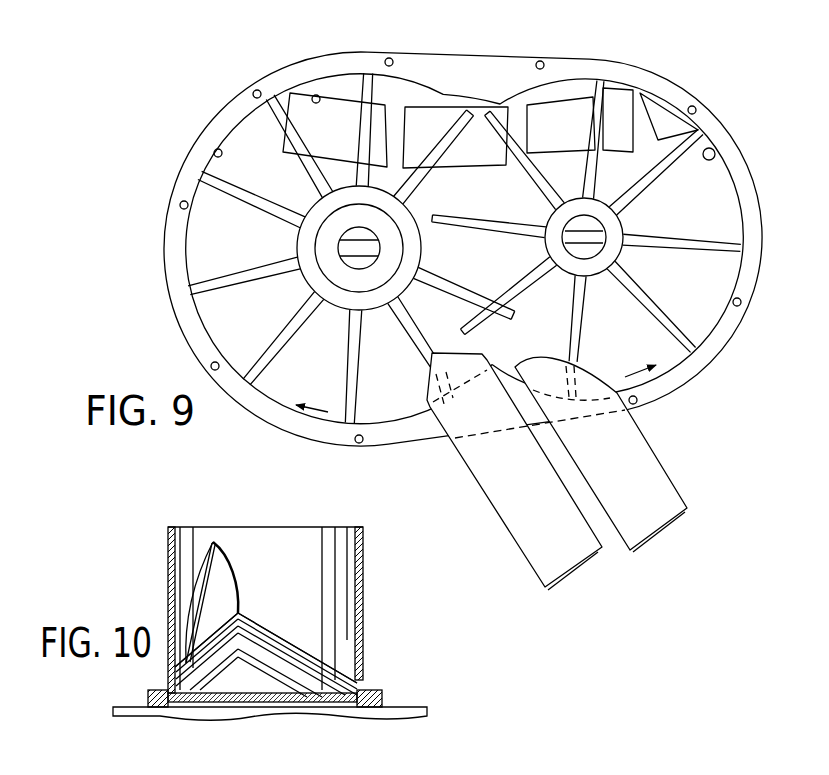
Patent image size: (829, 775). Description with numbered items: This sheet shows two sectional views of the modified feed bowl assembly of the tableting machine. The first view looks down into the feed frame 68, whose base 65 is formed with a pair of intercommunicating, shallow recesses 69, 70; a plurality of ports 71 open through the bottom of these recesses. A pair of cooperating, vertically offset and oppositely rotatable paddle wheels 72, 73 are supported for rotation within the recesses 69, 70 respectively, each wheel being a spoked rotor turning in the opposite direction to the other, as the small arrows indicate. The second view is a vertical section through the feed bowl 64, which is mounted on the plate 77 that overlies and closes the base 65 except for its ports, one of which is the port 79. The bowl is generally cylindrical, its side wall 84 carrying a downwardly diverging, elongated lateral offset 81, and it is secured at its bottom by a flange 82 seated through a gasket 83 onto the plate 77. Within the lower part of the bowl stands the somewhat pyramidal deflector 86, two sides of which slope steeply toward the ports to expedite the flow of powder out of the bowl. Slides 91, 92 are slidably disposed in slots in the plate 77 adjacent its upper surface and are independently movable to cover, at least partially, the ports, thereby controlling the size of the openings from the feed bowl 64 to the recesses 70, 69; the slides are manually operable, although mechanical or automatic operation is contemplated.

In FIG. 10, the feed bowl 64 is at (166, 578).
In FIG. 9, the base 65 is at (466, 62).
In FIG. 9, the feed frame 68 is at (688, 80).
In FIG. 9, the recess 69 is at (718, 160).
In FIG. 9, the recess 70 is at (214, 151).
In FIG. 9, the ports 71 is at (313, 95).
In FIG. 9, the paddle wheel 72 is at (702, 261).
In FIG. 9, the paddle wheel 73 is at (218, 268).
In FIG. 10, the plate 77 is at (410, 703).
In FIG. 10, the port 79 is at (364, 592).
In FIG. 10, the offset 81 is at (222, 570).
In FIG. 10, the flange 82 is at (373, 690).
In FIG. 10, the gasket 83 is at (148, 698).
In FIG. 10, the side wall 84 is at (198, 542).
In FIG. 10, the deflector 86 is at (247, 693).
In FIG. 9, the slide 91 is at (574, 541).
In FIG. 10, the slide 91 is at (218, 700).
In FIG. 9, the slide 92 is at (652, 513).
In FIG. 10, the slide 92 is at (322, 697).